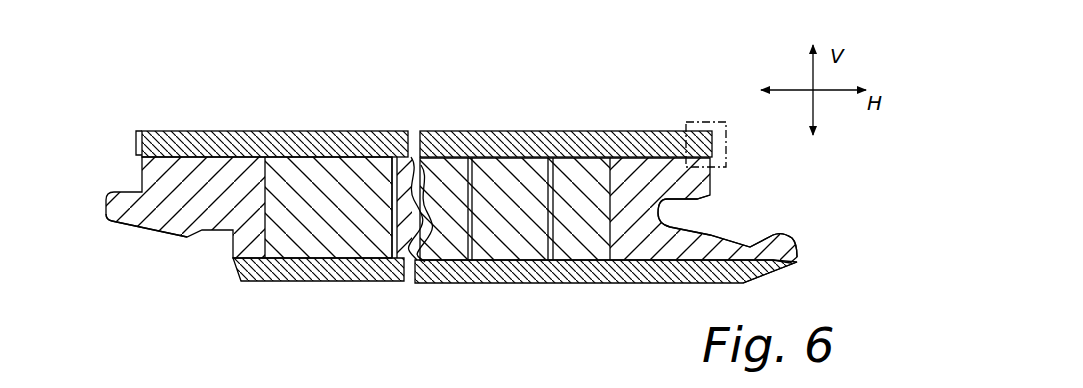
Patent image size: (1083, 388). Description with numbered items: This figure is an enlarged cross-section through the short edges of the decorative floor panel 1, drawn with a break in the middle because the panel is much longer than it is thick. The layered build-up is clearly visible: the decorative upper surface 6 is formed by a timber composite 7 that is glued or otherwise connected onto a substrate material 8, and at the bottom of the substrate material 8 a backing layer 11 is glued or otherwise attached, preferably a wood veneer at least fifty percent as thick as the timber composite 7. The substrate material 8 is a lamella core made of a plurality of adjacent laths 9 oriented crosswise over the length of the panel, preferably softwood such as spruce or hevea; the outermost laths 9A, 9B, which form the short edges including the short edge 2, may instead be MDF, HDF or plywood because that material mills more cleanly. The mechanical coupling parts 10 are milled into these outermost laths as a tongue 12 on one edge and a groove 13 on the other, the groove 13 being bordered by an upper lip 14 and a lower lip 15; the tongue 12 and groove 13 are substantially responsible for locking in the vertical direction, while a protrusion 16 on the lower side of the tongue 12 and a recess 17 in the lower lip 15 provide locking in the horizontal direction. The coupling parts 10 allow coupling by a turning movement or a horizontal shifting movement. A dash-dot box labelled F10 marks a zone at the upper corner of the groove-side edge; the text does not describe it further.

The floor panel 1 is at (372, 293).
The short edge 2 is at (92, 188).
The decorative upper surface 6 is at (277, 131).
The timber composite 7 is at (135, 142).
The substrate material 8 is at (541, 243).
The laths 9 is at (293, 235).
The outermost lath 9A is at (196, 187).
The outermost lath 9B is at (643, 187).
The mechanical coupling parts 10 is at (151, 275).
The backing layer 11 is at (297, 270).
The tongue 12 is at (139, 240).
The groove 13 is at (760, 199).
The upper lip 14 is at (711, 193).
The lower lip 15 is at (700, 252).
The protrusion 16 is at (198, 238).
The recess 17 is at (763, 241).
The force application zone F10 is at (696, 122).